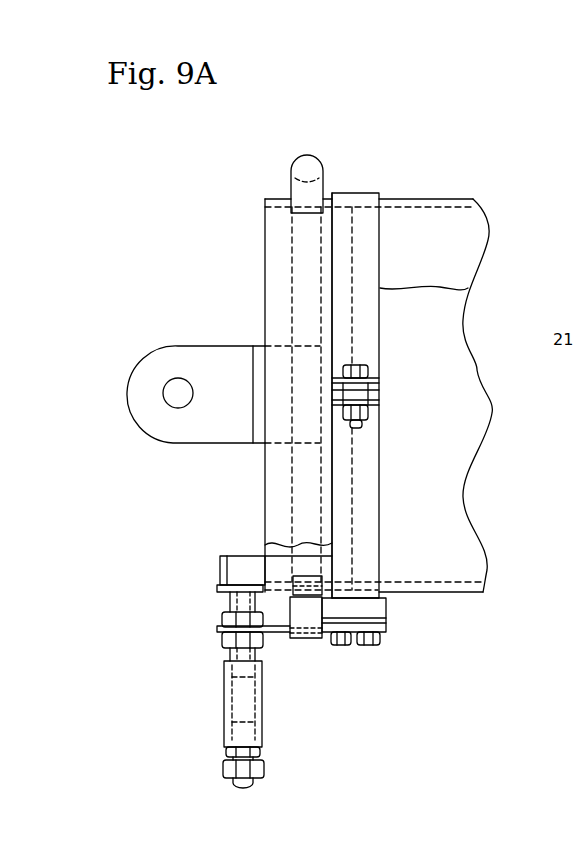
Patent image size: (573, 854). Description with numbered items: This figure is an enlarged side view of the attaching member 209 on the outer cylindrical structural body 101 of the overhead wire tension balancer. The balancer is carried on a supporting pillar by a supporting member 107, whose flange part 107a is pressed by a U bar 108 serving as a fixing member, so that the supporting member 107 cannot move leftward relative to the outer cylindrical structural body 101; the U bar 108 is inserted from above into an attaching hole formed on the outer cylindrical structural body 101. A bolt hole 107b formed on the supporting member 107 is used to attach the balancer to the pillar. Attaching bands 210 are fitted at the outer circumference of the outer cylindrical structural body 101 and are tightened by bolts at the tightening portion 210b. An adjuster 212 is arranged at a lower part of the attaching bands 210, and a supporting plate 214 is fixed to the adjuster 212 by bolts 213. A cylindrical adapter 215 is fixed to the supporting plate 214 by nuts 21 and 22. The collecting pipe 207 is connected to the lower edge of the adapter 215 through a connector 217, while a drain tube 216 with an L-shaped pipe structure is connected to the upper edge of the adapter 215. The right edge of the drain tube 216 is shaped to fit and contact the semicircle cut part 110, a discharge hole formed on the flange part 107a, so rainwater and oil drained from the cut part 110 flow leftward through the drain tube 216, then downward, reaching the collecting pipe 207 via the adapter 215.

The outer cylindrical structural body 101 is at (483, 594).
The supporting member 107 is at (223, 357).
The flange part 107a is at (468, 288).
The bolt hole 107b is at (172, 390).
The U bar 108 is at (306, 165).
The semicircle cut part 110 is at (343, 571).
The attaching bands 210 is at (370, 240).
The tightening portion 210b is at (388, 401).
The adjuster 212 is at (376, 607).
The bolts 213 is at (389, 651).
The supporting plate 214 is at (275, 633).
The cylindrical adapter 215 is at (243, 605).
The drain tube 216 is at (243, 572).
The connector 217 is at (224, 768).
The collecting pipe 207 is at (253, 786).
The attaching member 209 is at (219, 652).
The nut 21 is at (222, 617).
The nut 22 is at (220, 647).